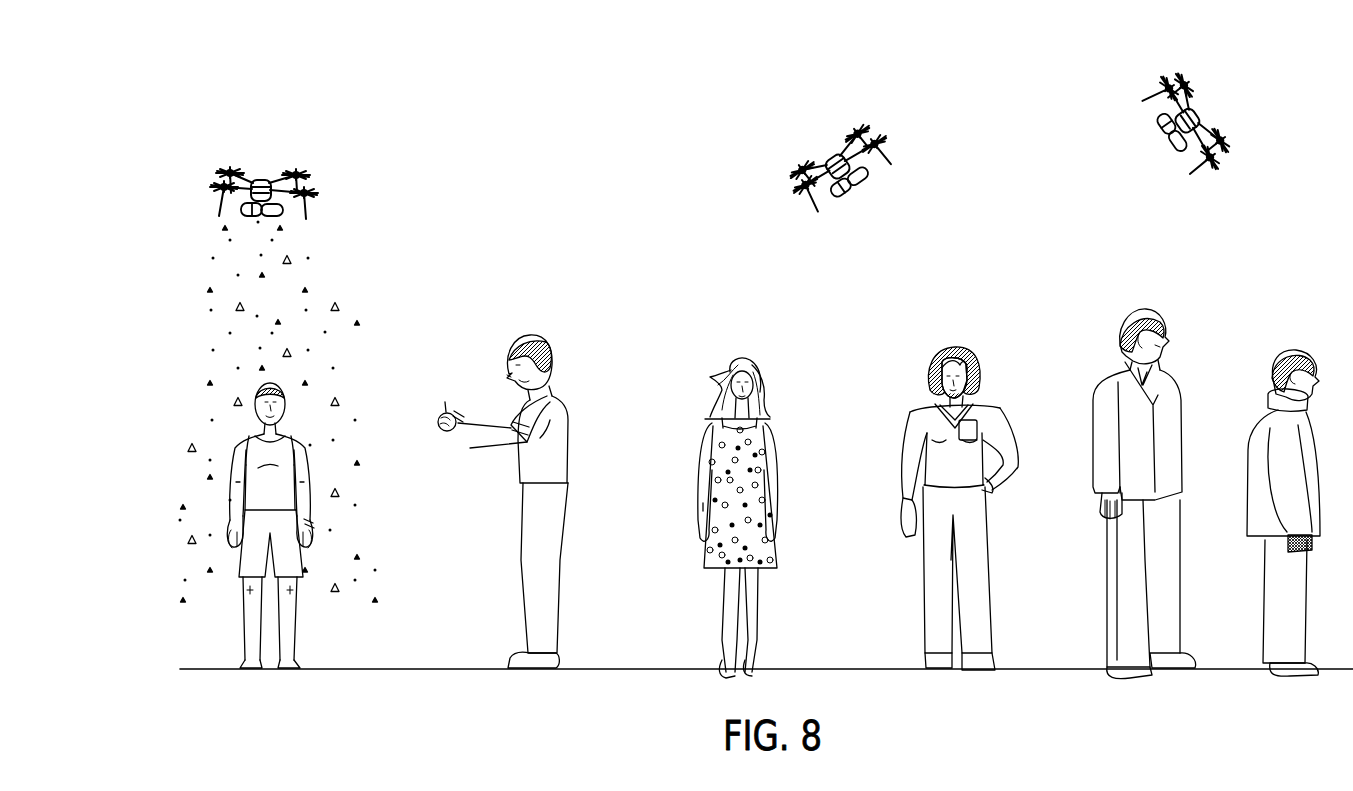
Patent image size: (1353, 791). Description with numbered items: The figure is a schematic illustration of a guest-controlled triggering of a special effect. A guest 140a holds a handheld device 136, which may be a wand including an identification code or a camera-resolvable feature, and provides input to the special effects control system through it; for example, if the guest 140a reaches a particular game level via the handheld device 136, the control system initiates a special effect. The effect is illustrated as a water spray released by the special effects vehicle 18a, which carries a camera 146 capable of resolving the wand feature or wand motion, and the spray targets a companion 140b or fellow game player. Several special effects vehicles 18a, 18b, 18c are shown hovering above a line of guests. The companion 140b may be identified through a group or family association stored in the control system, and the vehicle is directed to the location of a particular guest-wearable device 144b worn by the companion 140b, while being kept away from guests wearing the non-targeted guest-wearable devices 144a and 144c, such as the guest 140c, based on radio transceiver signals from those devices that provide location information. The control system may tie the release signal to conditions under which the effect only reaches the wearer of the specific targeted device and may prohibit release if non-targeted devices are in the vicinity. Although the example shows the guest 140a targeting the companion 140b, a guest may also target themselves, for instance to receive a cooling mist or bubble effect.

The special effects vehicle 18a is at (305, 176).
The special effects vehicle 18b is at (877, 133).
The special effects vehicle 18c is at (1190, 84).
The camera 146 is at (262, 180).
The handheld device 136 is at (447, 405).
The guest 140a is at (547, 510).
The companion 140b is at (253, 565).
The guest 140c is at (768, 468).
The guest-wearable device 144a is at (460, 438).
The guest-wearable device 144b is at (315, 523).
The guest-wearable device 144c is at (703, 507).